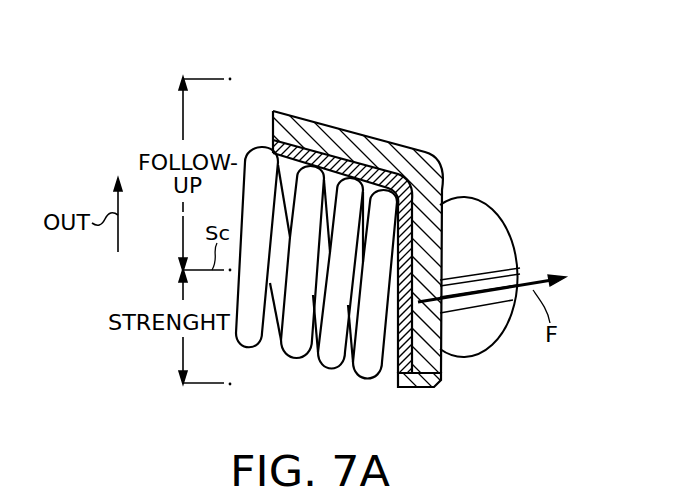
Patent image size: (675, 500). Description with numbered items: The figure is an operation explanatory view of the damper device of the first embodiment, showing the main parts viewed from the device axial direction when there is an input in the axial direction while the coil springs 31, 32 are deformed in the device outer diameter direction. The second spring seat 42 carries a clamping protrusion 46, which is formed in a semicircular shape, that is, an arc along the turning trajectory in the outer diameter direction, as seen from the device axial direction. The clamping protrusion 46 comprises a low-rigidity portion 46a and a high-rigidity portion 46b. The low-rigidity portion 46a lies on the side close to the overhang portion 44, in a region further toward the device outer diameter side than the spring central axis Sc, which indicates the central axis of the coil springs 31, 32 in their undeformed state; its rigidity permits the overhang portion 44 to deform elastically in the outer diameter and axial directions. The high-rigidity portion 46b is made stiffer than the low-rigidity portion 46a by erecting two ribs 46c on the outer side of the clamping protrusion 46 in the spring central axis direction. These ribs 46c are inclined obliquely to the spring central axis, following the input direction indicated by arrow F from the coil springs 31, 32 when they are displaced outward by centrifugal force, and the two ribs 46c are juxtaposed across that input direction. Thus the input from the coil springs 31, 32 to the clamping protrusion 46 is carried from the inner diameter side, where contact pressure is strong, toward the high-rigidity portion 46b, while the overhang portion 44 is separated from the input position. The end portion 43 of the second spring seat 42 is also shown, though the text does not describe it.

The coil spring 31 is at (297, 358).
The coil spring 32 is at (316, 297).
The second spring seat 42 is at (343, 248).
The lower end portion 43 is at (418, 388).
The overhang portion 44 is at (305, 112).
The clamping protrusion 46 is at (501, 272).
The low-rigidity portion 46a is at (470, 238).
The high-rigidity portion 46b is at (462, 326).
The rib 46c is at (463, 242).